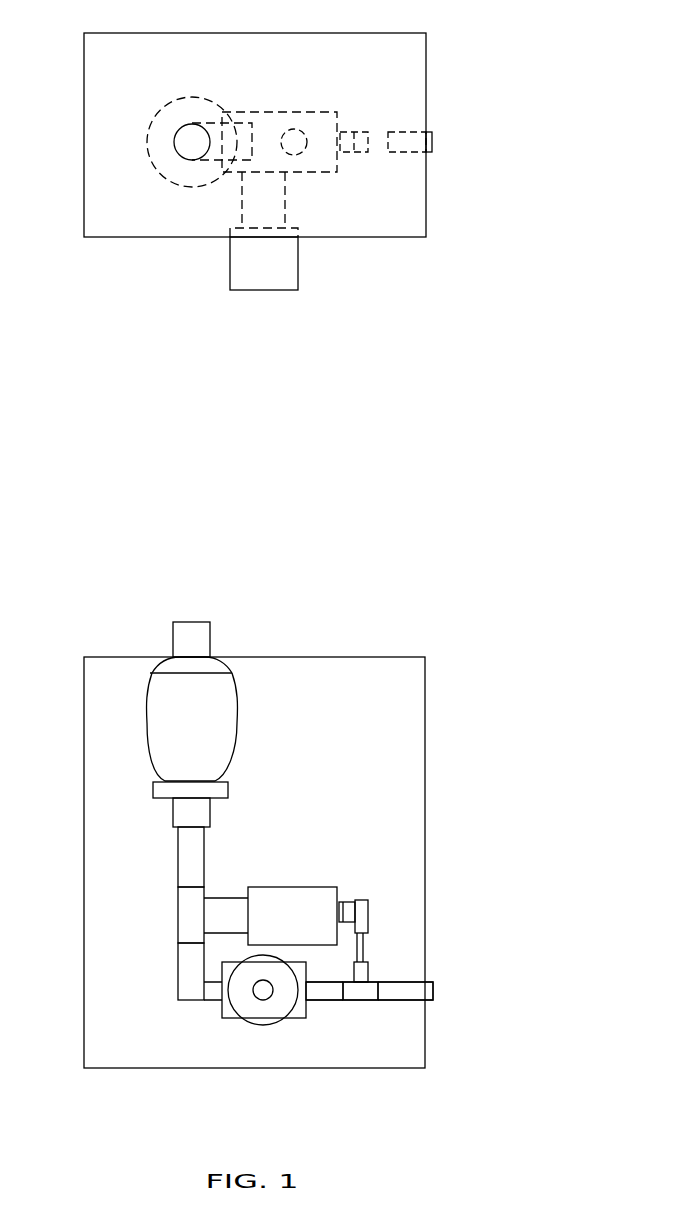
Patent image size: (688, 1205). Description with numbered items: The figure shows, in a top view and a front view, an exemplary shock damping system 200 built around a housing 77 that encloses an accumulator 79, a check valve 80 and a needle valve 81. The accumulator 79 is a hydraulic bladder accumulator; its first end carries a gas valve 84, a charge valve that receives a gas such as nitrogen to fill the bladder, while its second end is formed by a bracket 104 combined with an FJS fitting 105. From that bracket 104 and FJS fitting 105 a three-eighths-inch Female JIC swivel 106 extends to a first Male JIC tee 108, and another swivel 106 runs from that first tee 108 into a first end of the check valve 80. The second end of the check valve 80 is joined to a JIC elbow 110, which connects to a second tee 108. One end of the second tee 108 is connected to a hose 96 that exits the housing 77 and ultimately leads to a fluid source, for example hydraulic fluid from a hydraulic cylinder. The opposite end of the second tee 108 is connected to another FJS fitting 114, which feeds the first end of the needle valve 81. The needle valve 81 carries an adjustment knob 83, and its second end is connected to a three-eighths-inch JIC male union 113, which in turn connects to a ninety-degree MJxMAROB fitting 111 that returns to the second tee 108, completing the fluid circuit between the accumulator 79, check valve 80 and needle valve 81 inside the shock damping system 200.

The housing 77 is at (432, 63).
The shock damping system 200 is at (465, 253).
The accumulator 79 is at (162, 107).
The gas valve 84 is at (177, 152).
The check valve 80 is at (319, 123).
The needle valve 81 is at (287, 202).
The adjustment knob 83 is at (263, 268).
The bracket 104 is at (218, 790).
The FJS fitting 105 is at (183, 812).
The Female JIC swivel 106 is at (192, 855).
The Male JIC tee 108 is at (190, 917).
The JIC elbow 110 is at (363, 912).
The MJxMAROB fitting 90° 111 is at (192, 967).
The JIC male union 113 is at (213, 992).
The FJS fitting 114 is at (327, 992).
The hose 96 is at (433, 988).